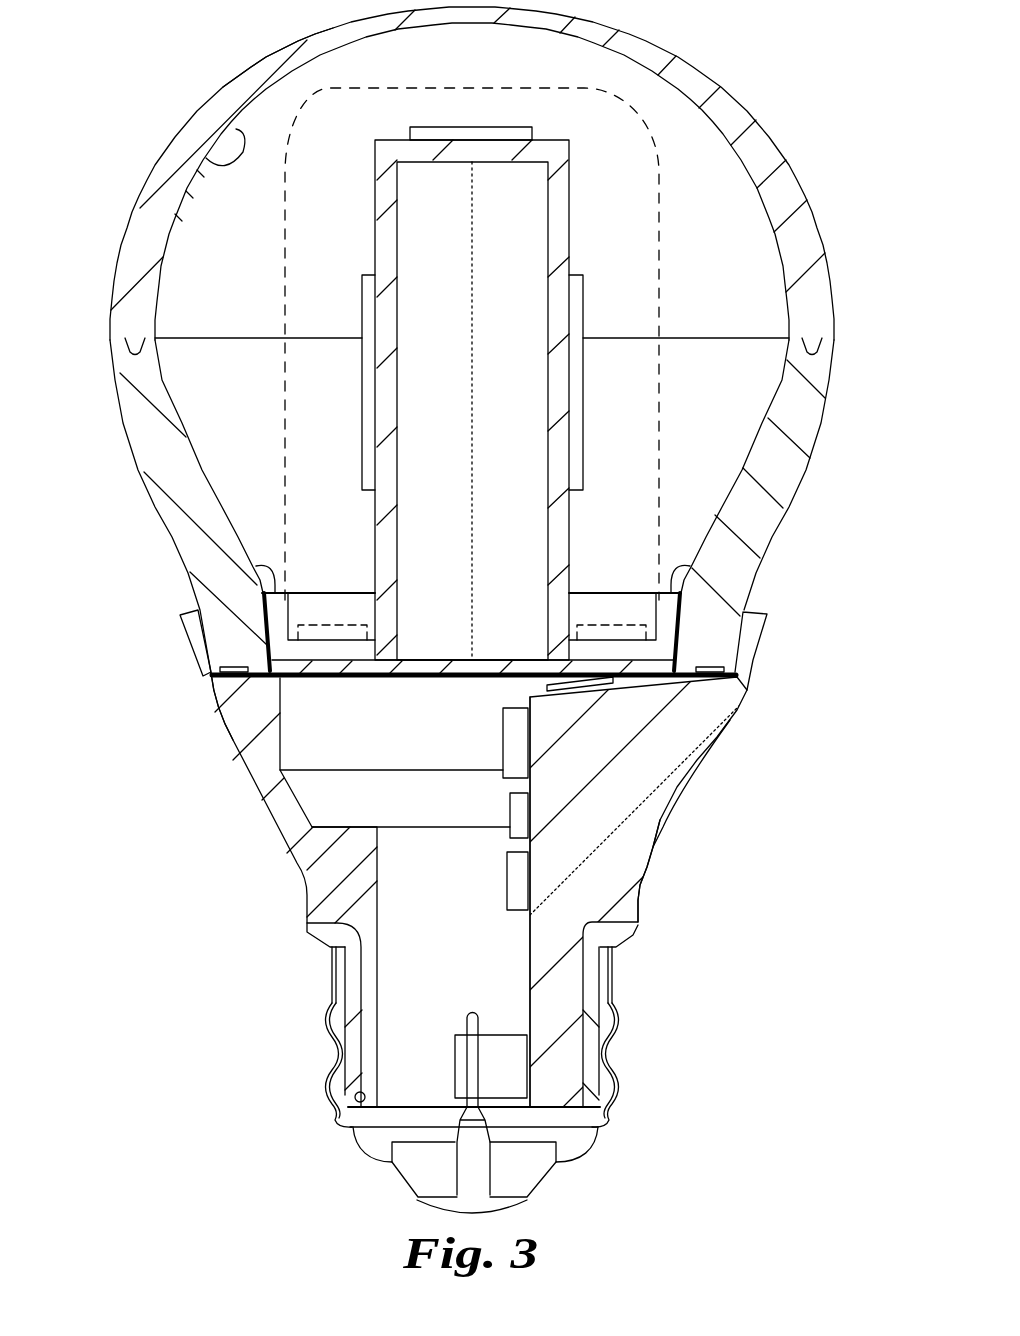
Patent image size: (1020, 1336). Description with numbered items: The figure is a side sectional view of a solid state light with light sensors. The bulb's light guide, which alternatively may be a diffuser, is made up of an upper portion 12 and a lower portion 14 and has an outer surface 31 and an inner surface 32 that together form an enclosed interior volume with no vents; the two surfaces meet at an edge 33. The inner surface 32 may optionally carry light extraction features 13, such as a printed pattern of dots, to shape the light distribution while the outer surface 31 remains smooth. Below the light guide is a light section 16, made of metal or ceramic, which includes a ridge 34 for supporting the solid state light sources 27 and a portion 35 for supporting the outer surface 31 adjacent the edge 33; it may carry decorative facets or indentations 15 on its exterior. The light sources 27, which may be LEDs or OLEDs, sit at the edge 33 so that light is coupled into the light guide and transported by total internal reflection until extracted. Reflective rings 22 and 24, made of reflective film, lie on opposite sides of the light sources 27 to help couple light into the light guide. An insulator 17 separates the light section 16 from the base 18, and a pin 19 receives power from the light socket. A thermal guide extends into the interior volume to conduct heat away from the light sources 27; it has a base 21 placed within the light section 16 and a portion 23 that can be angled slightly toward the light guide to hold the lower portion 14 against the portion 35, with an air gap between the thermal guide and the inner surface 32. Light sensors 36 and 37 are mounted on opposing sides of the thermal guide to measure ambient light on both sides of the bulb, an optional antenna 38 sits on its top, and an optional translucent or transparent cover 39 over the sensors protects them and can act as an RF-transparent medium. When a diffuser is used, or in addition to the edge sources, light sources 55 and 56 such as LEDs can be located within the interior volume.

The upper portion of light guide 12 is at (773, 147).
The light extraction features 13 is at (202, 176).
The lower portion of light guide 14 is at (797, 480).
The decorative facets or indentations 15 is at (690, 772).
The light section 16 is at (648, 868).
The insulator 17 is at (620, 937).
The base 18 is at (612, 1068).
The pin 19 is at (472, 1165).
The base of thermal guide 21 is at (308, 613).
The reflective ring 22 is at (262, 613).
The portion of thermal guide 23 is at (262, 572).
The reflective ring 24 is at (210, 660).
The solid state light sources 27 is at (700, 660).
The outer surface 31 is at (228, 88).
The inner surface 32 is at (226, 155).
The edge 33 is at (222, 693).
The ridge 34 is at (230, 737).
The portion 35 is at (180, 620).
The light sensor 36 is at (583, 425).
The light sensor 37 is at (365, 400).
The antenna 38 is at (532, 135).
The cover 39 is at (662, 298).
The light source 55 is at (628, 625).
The light source 56 is at (352, 625).